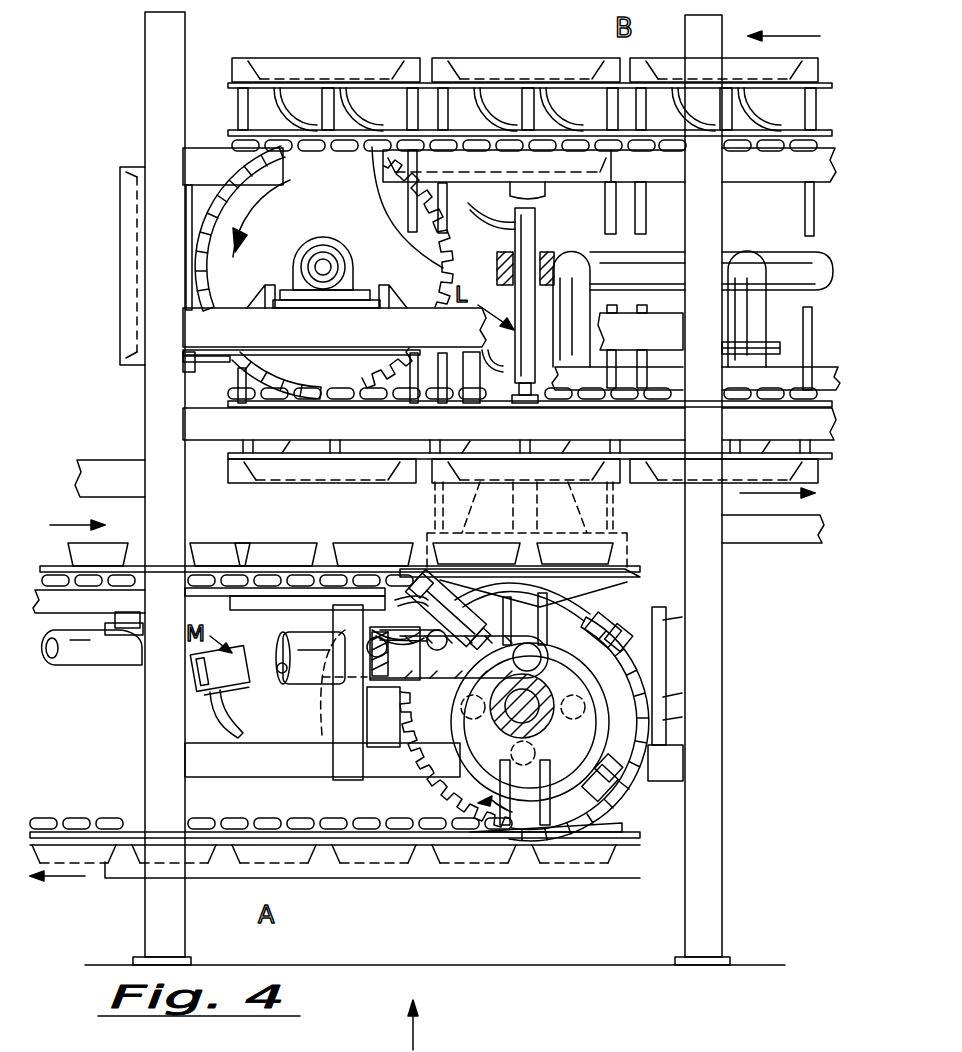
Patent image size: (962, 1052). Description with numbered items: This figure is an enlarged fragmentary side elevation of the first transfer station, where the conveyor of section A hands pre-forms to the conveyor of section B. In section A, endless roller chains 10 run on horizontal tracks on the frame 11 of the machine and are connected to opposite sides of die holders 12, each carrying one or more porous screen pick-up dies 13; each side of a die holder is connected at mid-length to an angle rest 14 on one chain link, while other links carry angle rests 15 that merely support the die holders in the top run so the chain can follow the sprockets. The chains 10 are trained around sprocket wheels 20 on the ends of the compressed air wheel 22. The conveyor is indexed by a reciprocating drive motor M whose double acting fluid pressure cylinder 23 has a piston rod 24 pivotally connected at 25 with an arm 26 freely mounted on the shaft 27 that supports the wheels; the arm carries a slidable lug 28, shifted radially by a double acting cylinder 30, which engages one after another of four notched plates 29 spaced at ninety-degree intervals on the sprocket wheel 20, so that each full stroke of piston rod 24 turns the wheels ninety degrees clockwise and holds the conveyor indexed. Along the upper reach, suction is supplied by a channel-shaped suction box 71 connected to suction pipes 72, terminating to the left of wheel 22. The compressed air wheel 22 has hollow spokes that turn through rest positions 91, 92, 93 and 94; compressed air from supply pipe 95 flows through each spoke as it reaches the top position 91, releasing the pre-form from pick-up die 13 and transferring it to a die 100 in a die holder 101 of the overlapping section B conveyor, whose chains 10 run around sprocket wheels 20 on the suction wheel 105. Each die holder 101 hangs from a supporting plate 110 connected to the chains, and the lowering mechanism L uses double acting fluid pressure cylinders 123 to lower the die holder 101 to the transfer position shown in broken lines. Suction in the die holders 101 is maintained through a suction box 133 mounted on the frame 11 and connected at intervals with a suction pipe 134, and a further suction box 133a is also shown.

The endless roller chains 10 is at (630, 152).
The frame 11 is at (150, 60).
The die holders 12 is at (292, 540).
The porous screen pick-up dies 13 is at (284, 542).
The angle rest 14 is at (206, 268).
The angle rests 15 is at (245, 363).
The sprocket wheels 20 is at (452, 250).
The compressed air wheel 22 is at (562, 832).
The double acting fluid pressure cylinders 23 is at (318, 682).
The piston rod 24 is at (398, 688).
The pivotal connection 25 is at (386, 628).
The arm 26 is at (445, 608).
The shaft 27 is at (543, 693).
The slidable lug 28 is at (484, 640).
The notched plates 29 is at (568, 607).
The double acting cylinder 30 is at (412, 532).
The suction box 71 is at (62, 588).
The suction pipes 72 is at (70, 668).
The rest position 91 is at (548, 645).
The rest position 92 is at (631, 681).
The rest position 93 is at (530, 734).
The rest position 94 is at (467, 731).
The supply pipe 95 is at (290, 640).
The die 100 is at (297, 63).
The die holder 101 is at (228, 84).
The suction wheel 105 is at (342, 218).
The supporting plate 110 is at (235, 405).
The double acting fluid pressure cylinders 123 is at (540, 232).
The suction box 133 is at (832, 367).
The suction box 133a is at (510, 183).
The suction pipe 134 is at (786, 252).